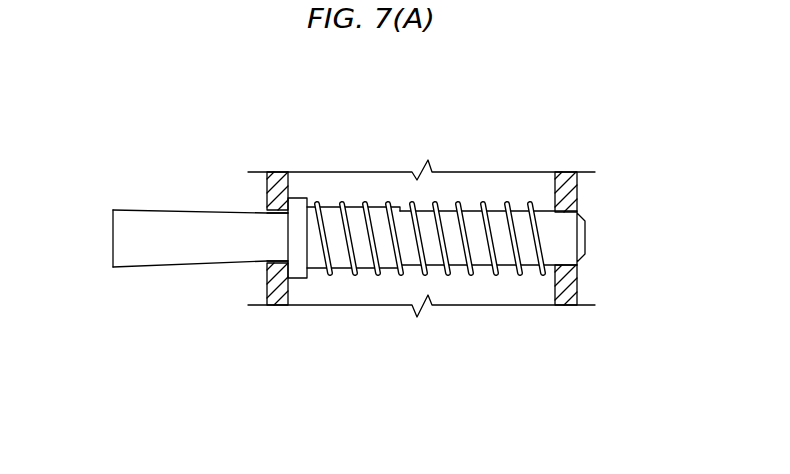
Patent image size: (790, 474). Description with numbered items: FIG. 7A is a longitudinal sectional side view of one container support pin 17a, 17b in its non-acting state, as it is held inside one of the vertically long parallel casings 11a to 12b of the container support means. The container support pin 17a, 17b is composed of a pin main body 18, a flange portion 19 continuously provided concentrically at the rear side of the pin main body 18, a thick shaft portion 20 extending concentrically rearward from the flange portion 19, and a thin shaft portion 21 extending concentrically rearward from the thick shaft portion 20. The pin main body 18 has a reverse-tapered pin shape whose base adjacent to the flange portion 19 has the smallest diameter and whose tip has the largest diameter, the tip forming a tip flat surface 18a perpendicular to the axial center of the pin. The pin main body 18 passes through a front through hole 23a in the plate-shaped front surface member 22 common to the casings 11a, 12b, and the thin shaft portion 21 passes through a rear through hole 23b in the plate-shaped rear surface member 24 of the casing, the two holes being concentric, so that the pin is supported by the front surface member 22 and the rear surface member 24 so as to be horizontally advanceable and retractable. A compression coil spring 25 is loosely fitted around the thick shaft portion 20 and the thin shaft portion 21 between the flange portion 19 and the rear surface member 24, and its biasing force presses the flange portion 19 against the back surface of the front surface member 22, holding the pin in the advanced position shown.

The container support pin 17a is at (167, 201).
The container support pin 17b is at (370, 238).
The casing 11a is at (266, 282).
The casing 12b is at (354, 256).
The pin main body 18 is at (205, 252).
The tip flat surface 18a is at (113, 238).
The flange portion 19 is at (300, 198).
The thick shaft portion 20 is at (365, 263).
The thin shaft portion 21 is at (493, 220).
The front surface member 22 is at (278, 296).
The front through hole 23a is at (268, 214).
The rear through hole 23b is at (565, 263).
The rear surface member 24 is at (563, 183).
The compression coil spring 25 is at (492, 257).